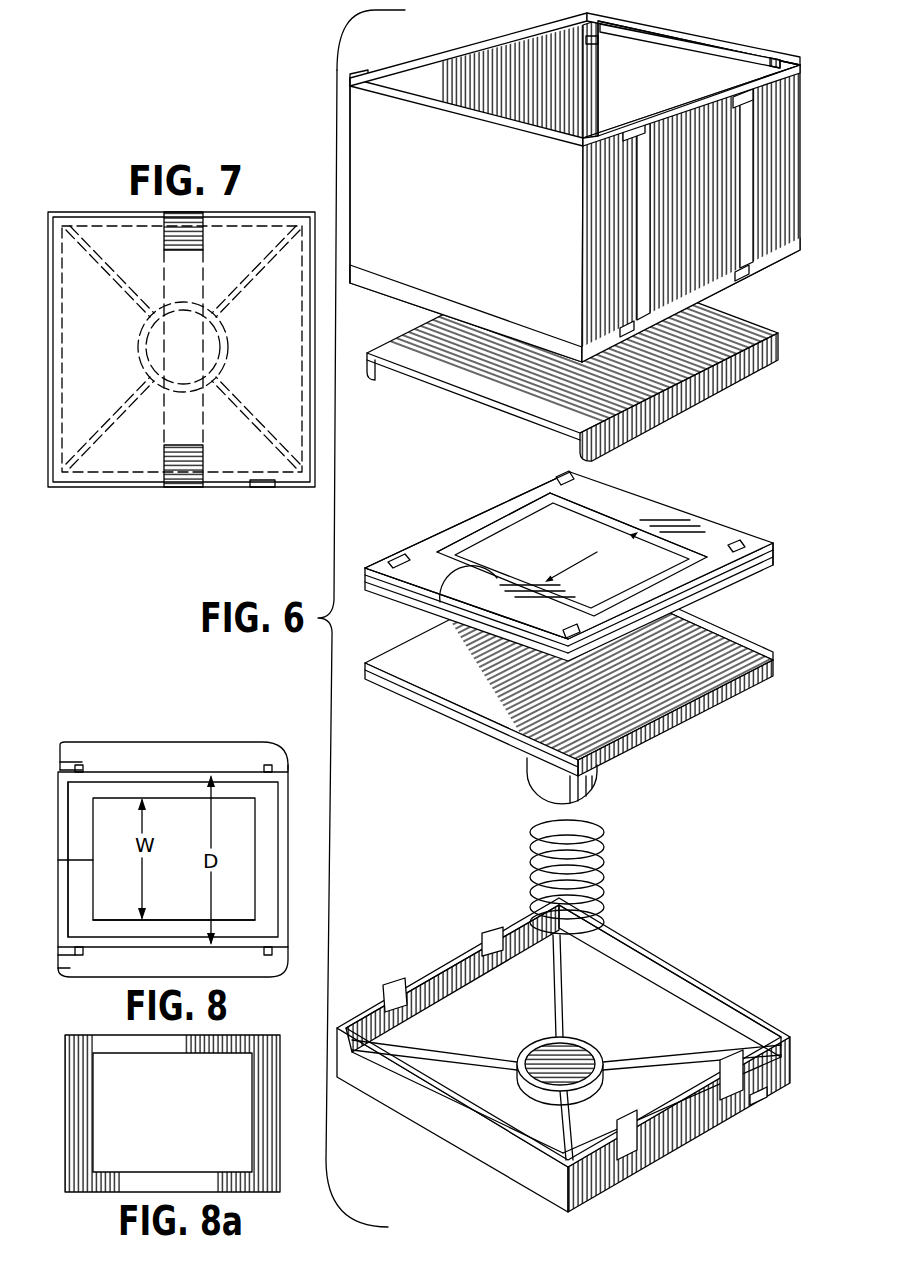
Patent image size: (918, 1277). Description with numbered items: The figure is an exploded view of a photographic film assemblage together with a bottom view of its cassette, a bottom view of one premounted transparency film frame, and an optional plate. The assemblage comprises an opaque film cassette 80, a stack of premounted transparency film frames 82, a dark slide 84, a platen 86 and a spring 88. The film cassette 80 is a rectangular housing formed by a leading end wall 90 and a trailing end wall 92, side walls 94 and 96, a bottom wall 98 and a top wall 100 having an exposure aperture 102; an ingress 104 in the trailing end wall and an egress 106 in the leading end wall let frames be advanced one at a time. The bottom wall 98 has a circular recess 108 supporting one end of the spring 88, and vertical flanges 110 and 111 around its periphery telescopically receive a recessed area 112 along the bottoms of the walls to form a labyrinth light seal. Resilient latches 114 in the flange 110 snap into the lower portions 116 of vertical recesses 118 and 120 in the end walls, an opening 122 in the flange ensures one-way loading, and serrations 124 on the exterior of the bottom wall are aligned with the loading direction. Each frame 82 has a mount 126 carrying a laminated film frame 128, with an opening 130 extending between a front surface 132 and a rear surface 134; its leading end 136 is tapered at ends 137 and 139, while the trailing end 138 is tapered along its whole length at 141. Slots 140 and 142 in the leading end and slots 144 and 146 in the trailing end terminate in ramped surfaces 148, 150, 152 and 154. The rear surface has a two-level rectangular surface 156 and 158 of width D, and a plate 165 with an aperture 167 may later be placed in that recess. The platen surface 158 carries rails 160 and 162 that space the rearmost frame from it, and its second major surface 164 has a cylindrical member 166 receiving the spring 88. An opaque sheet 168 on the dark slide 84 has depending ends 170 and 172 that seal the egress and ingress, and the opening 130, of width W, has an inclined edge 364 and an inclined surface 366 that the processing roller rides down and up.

In FIG. 6, the film cassette 80 is at (591, 184).
In FIG. 6, the premounted transparency film frame 82 is at (558, 557).
In FIG. 6, the dark slide 84 is at (561, 357).
In FIG. 6, the platen 86 is at (568, 679).
In FIG. 6, the spring 88 is at (605, 880).
In FIG. 6, the leading end wall 90 is at (775, 170).
In FIG. 6, the trailing end wall 92 is at (490, 78).
In FIG. 6, the side wall 94 is at (372, 228).
In FIG. 6, the side wall 96 is at (733, 62).
In FIG. 6, the bottom wall 98 is at (570, 1055).
In FIG. 7, the bottom wall 98 is at (108, 324).
In FIG. 6, the top wall 100 is at (493, 103).
In FIG. 6, the exposure aperture 102 is at (612, 38).
In FIG. 6, the ingress 104 is at (493, 70).
In FIG. 6, the egress 106 is at (618, 120).
In FIG. 6, the circular recess 108 is at (550, 1037).
In FIG. 6, the vertical flange 110 is at (455, 1135).
In FIG. 6, the vertical flange 111 is at (650, 980).
In FIG. 7, the vertical flange 111 is at (108, 222).
In FIG. 6, the recessed area 112 is at (408, 297).
In FIG. 6, the resilient latch 114 is at (482, 937).
In FIG. 6, the lower portion of vertical recess 116 is at (745, 280).
In FIG. 6, the vertical recess 118 is at (425, 78).
In FIG. 6, the vertical recess 120 is at (590, 48).
In FIG. 6, the opening 122 is at (760, 1097).
In FIG. 7, the opening 122 is at (265, 488).
In FIG. 6, the serrations 124 is at (683, 1145).
In FIG. 7, the serrations 124 is at (177, 453).
In FIG. 6, the mount 126 is at (708, 520).
In FIG. 6, the film frame 128 is at (612, 530).
In FIG. 6, the opening 130 is at (478, 583).
In FIG. 8, the opening 130 is at (255, 873).
In FIG. 6, the front surface 132 is at (497, 507).
In FIG. 8, the rear surface 134 is at (173, 752).
In FIG. 6, the leading end 136 is at (690, 583).
In FIG. 8, the leading end 136 is at (60, 818).
In FIG. 8, the tapered end 137 is at (60, 963).
In FIG. 6, the trailing end 138 is at (425, 540).
In FIG. 8, the trailing end 138 is at (288, 825).
In FIG. 6, the tapered end 139 is at (752, 570).
In FIG. 8, the tapered end 139 is at (65, 750).
In FIG. 6, the slot 140 is at (570, 632).
In FIG. 8, the slot 140 is at (75, 957).
In FIG. 6, the taper 141 is at (445, 530).
In FIG. 6, the slot 142 is at (740, 546).
In FIG. 8, the slot 142 is at (63, 767).
In FIG. 6, the slot 144 is at (390, 560).
In FIG. 8, the slot 144 is at (277, 957).
In FIG. 6, the slot 146 is at (557, 478).
In FIG. 8, the slot 146 is at (292, 768).
In FIG. 8, the ramped surface 148 is at (78, 957).
In FIG. 8, the ramped surface 150 is at (93, 767).
In FIG. 8, the ramped surface 152 is at (263, 957).
In FIG. 8, the ramped surface 154 is at (267, 772).
In FIG. 8, the rectangular surface 156 is at (62, 902).
In FIG. 6, the rectangular surface 158 is at (504, 690).
In FIG. 8, the rectangular surface 158 is at (75, 868).
In FIG. 6, the rail 160 is at (440, 695).
In FIG. 6, the rail 162 is at (745, 685).
In FIG. 6, the second major surface 164 is at (628, 750).
In FIG. 8a, the plate 165 is at (263, 1043).
In FIG. 6, the cylindrically shaped member 166 is at (530, 770).
In FIG. 8a, the aperture 167 is at (163, 1053).
In FIG. 6, the opaque sheet of material 168 is at (478, 380).
In FIG. 6, the depending end 170 is at (690, 400).
In FIG. 6, the depending end 172 is at (372, 378).
In FIG. 6, the inclined edge 364 is at (688, 570).
In FIG. 6, the inclined surface 366 is at (527, 515).